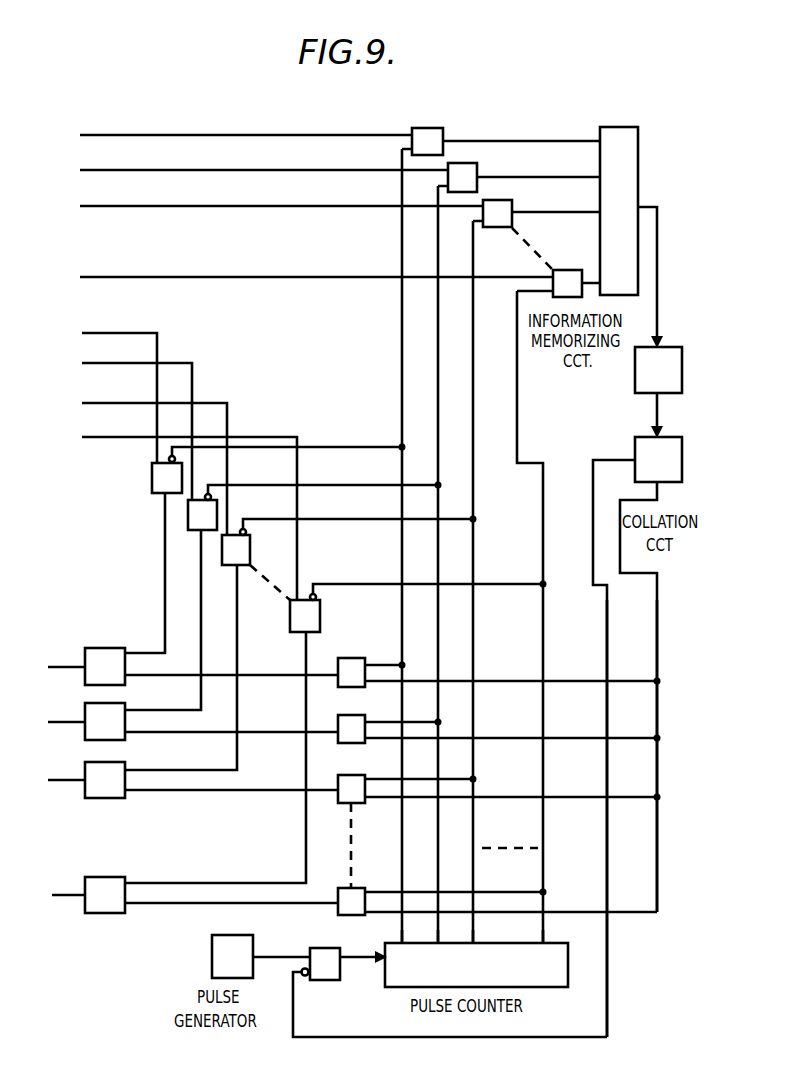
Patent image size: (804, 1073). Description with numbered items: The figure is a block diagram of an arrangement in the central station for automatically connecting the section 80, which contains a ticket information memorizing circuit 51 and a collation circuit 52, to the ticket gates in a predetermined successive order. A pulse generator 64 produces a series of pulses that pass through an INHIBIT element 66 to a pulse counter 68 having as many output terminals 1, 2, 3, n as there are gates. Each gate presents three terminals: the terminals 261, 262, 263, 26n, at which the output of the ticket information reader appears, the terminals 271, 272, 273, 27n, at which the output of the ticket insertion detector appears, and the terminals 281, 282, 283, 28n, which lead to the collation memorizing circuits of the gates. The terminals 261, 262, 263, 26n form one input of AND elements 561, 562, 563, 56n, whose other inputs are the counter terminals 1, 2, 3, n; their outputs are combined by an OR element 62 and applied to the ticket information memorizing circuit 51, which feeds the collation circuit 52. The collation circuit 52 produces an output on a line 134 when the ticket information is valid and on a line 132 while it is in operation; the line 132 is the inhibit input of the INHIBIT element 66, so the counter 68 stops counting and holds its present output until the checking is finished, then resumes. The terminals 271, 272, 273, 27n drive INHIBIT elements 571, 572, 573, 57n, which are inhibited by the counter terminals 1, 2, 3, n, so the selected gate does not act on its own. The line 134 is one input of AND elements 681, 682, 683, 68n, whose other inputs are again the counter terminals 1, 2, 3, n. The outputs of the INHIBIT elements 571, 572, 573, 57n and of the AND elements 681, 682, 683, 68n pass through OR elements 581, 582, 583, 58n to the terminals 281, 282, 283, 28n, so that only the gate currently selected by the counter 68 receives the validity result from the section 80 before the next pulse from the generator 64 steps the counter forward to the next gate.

The terminal 261 is at (246, 118).
The terminal 262 is at (264, 153).
The terminal 263 is at (281, 189).
The terminal 26n is at (316, 259).
The terminal 271 is at (140, 381).
The terminal 272 is at (137, 417).
The terminal 273 is at (154, 453).
The terminal 27n is at (189, 504).
The AND element 561 is at (445, 130).
The AND element 562 is at (480, 170).
The AND element 563 is at (515, 207).
The AND element 56n is at (566, 270).
The OR element 62 is at (640, 130).
The ticket information memorizing circuit 51 is at (673, 386).
The collation circuit 52 is at (673, 475).
The section 80 is at (625, 438).
The INHIBIT element 571 is at (152, 478).
The INHIBIT element 572 is at (188, 510).
The INHIBIT element 573 is at (252, 560).
The INHIBIT element 57n is at (332, 603).
The OR element 581 is at (136, 639).
The OR element 582 is at (136, 694).
The OR element 583 is at (127, 765).
The OR element 58n is at (127, 880).
The terminal 281 is at (68, 662).
The terminal 282 is at (66, 722).
The terminal 283 is at (88, 778).
The terminal 28n is at (60, 895).
The AND element 681 is at (376, 647).
The AND element 682 is at (340, 714).
The AND element 683 is at (340, 774).
The AND element 68n is at (368, 888).
The line 132 is at (607, 625).
The line 134 is at (656, 632).
The pulse generator 64 is at (247, 972).
The INHIBIT element 66 is at (340, 952).
The pulse counter 68 is at (491, 979).
The output terminal 1 is at (405, 928).
The output terminal 2 is at (441, 928).
The output terminal 3 is at (477, 928).
The output terminal n is at (546, 928).